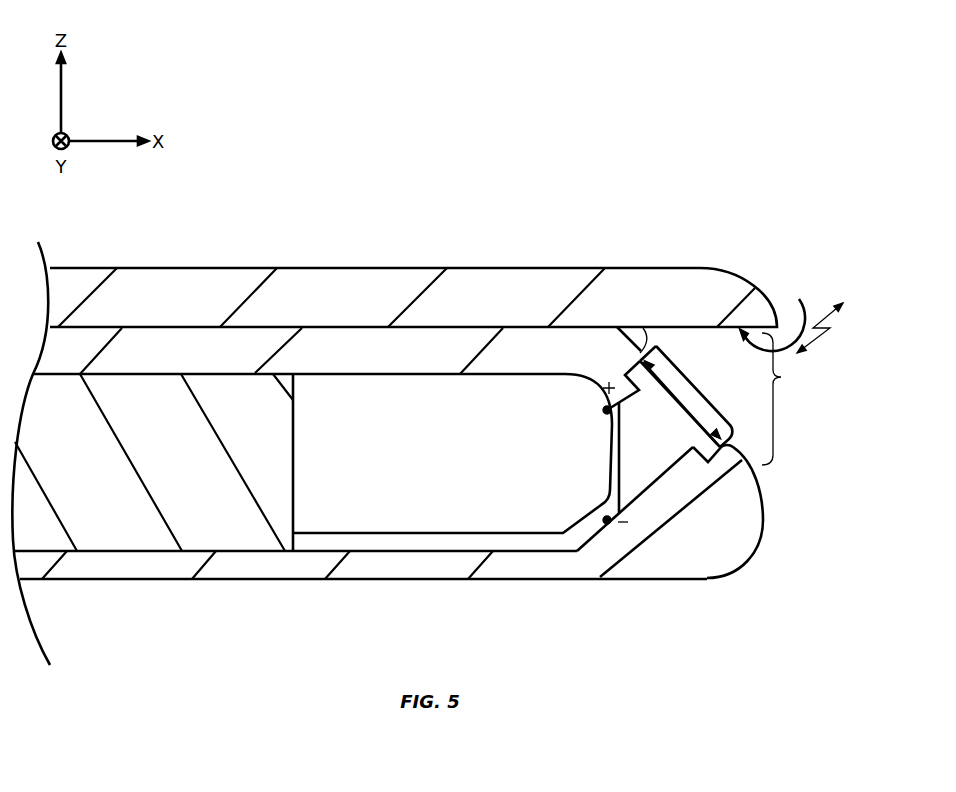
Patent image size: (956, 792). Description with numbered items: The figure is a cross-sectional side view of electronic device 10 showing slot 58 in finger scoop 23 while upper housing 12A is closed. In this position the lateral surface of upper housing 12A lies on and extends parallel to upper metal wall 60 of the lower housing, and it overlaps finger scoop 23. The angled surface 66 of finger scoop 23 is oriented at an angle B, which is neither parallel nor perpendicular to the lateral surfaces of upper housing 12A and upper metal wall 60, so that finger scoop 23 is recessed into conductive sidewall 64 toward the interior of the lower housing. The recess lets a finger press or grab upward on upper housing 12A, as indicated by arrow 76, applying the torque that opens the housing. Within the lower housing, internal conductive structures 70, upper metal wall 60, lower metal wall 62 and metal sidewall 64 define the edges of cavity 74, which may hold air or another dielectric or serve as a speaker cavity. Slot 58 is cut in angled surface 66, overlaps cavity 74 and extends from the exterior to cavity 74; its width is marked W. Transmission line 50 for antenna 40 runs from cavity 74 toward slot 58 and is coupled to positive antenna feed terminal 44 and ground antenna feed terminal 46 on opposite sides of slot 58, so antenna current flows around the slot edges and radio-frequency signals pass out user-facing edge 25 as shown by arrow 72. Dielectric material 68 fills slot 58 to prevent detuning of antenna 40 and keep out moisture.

The electronic device 10 is at (471, 147).
The upper housing 12A is at (220, 275).
The upper metal wall 60 is at (333, 342).
The internal conductive structures 70 is at (113, 543).
The lower metal wall 62 is at (290, 567).
The cavity 74 is at (403, 462).
The transmission line 50 is at (320, 532).
The dielectric material 68 is at (654, 472).
The metal sidewall 64 is at (776, 525).
The slot 58 is at (735, 440).
The width W is at (672, 412).
The angle B is at (652, 336).
The positive antenna feed terminal 44 is at (603, 410).
The ground antenna feed terminal 46 is at (607, 524).
The angled surface 66 is at (647, 327).
The arrow 76 is at (792, 317).
The arrow 72 is at (820, 340).
The finger scoop 23 is at (785, 399).
The antenna 40 is at (766, 425).
The user-facing edge 25 is at (806, 473).